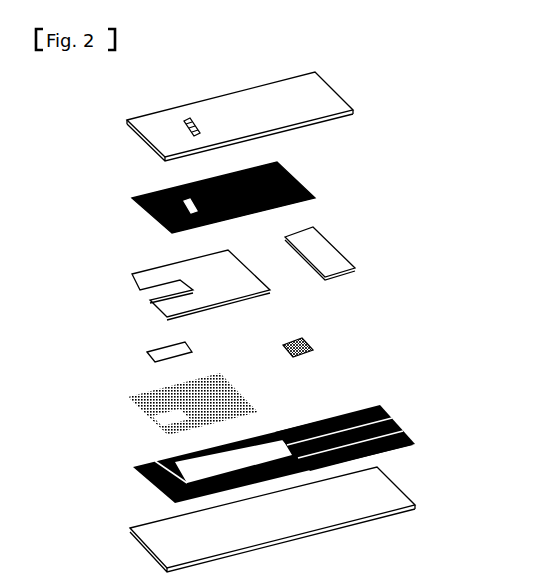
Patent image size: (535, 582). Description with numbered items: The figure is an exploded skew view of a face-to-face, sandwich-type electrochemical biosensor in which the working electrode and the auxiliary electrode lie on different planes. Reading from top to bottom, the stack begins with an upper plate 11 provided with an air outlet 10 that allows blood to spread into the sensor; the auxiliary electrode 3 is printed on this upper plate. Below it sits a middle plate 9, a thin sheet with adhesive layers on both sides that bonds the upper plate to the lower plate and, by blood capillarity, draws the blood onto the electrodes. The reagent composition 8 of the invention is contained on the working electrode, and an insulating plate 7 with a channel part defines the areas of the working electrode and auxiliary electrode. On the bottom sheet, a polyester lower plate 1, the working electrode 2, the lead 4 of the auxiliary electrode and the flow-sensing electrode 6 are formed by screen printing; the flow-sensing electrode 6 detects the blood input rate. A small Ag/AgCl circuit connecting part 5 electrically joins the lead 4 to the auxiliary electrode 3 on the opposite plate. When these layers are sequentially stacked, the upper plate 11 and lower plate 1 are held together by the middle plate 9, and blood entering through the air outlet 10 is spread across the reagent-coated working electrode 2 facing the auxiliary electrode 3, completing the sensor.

The lower plate 1 is at (155, 553).
The working electrode 2 is at (153, 495).
The auxiliary electrode 3 is at (158, 224).
The lead of auxiliary electrode 4 is at (400, 425).
The circuit connecting part 5 is at (313, 342).
The flow-sensing electrode 6 is at (160, 458).
The insulating plate 7 is at (140, 393).
The reagent composition 8 is at (150, 350).
The middle plate 9 is at (136, 274).
The air outlet 10 is at (187, 122).
The upper plate 11 is at (307, 93).